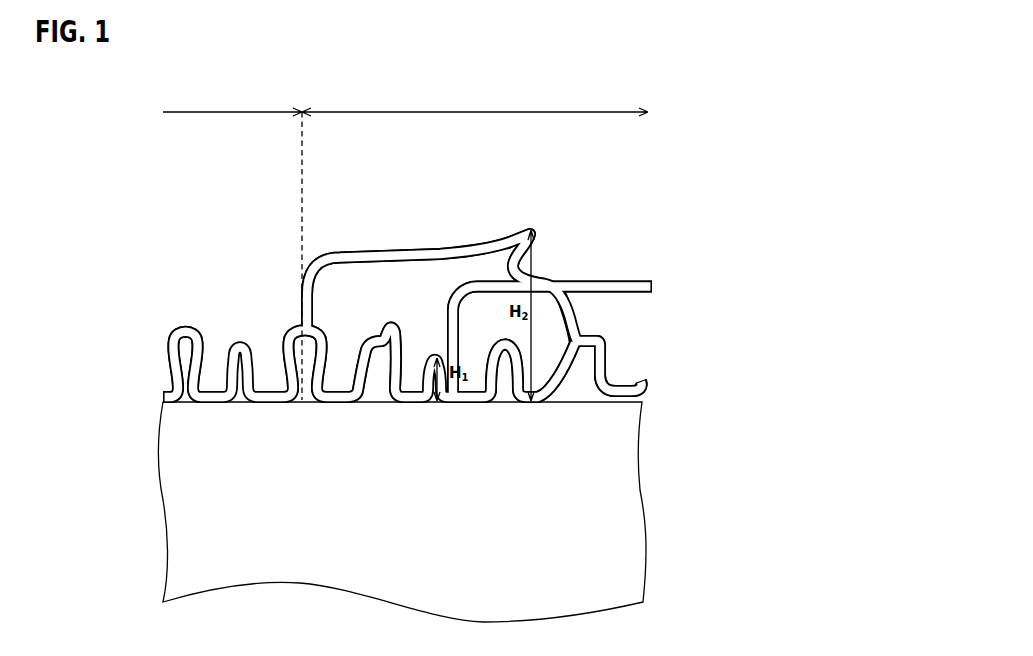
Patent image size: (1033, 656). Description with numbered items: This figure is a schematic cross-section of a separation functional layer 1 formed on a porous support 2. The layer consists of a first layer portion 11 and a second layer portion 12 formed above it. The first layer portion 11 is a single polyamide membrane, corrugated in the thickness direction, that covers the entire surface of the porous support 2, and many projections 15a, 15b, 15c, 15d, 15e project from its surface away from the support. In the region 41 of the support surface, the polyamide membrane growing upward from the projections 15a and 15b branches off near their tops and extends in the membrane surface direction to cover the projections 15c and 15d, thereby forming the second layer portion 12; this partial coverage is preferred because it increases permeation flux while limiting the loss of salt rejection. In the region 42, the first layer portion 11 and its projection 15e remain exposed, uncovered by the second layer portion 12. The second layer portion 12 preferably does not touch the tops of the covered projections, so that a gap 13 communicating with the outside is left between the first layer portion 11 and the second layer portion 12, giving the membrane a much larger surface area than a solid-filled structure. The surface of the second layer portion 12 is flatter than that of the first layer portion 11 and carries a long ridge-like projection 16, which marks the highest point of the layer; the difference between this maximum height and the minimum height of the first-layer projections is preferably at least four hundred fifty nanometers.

The separation functional layer 1 is at (375, 278).
The porous support 2 is at (154, 470).
The first layer portion 11 is at (570, 366).
The second layer portion 12 is at (580, 298).
The gap 13 is at (349, 296).
The projection 15a is at (300, 321).
The projection 15b is at (552, 297).
The projection 15c is at (390, 322).
The projection 15d is at (500, 341).
The projection 15e is at (183, 324).
The ridge-like projection 16 is at (530, 228).
The region 41 is at (475, 104).
The region 42 is at (232, 246).